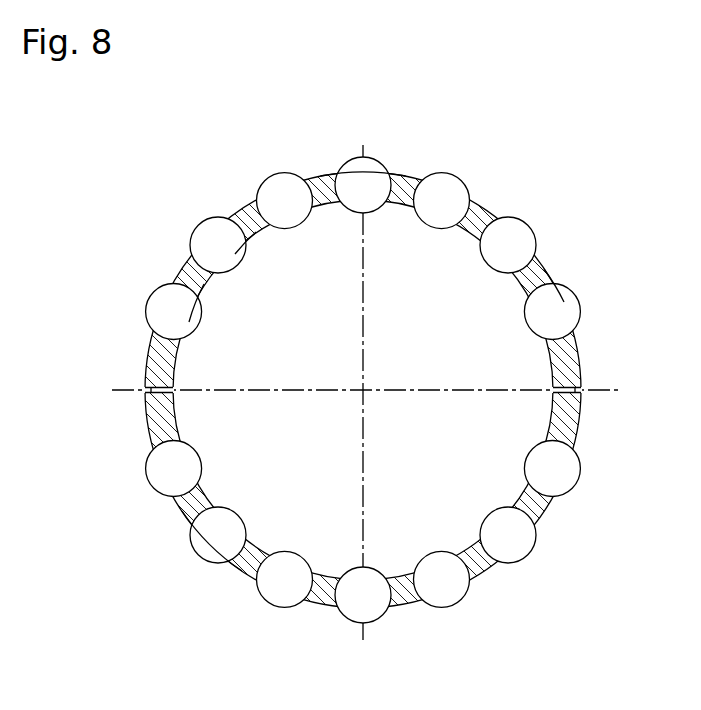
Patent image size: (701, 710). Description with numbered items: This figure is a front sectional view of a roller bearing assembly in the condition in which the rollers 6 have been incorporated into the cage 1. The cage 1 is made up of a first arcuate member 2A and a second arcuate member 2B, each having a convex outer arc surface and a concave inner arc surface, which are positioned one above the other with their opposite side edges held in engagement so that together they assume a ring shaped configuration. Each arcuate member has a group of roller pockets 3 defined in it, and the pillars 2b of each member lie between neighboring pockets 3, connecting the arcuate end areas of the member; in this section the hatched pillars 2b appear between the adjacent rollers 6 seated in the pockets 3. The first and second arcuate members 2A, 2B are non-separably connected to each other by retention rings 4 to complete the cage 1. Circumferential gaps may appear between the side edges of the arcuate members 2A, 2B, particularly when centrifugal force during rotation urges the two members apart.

The cage 1 is at (148, 243).
The first arcuate member 2A is at (555, 279).
The second arcuate member 2B is at (242, 572).
The pillar 2b is at (405, 174).
The roller pocket 3 is at (211, 259).
The retention ring 4 is at (144, 390).
The roller 6 is at (257, 192).